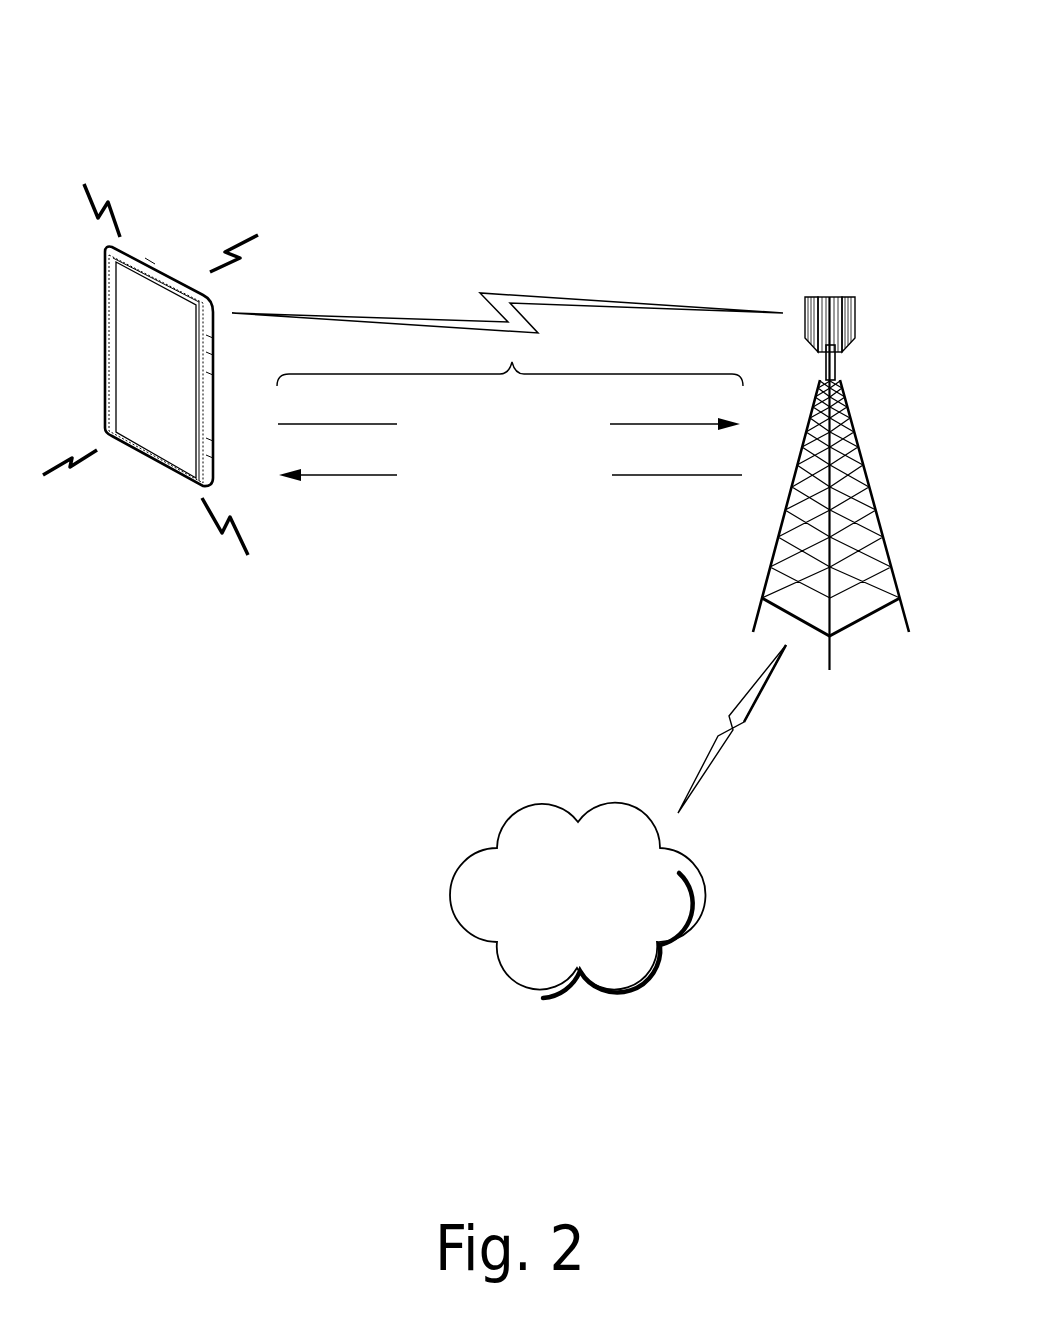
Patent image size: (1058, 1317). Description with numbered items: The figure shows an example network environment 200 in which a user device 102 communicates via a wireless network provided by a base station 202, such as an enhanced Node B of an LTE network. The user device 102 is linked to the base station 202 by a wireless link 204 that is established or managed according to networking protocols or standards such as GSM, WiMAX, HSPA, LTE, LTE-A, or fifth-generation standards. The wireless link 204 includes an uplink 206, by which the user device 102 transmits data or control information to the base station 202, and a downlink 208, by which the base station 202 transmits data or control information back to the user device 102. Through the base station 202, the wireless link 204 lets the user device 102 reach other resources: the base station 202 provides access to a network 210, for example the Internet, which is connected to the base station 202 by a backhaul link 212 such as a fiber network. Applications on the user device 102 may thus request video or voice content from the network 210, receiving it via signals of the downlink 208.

The network environment 200 is at (174, 52).
The user device 102 is at (147, 472).
The wireless link 204 is at (548, 284).
The base station 202 is at (857, 465).
The uplink 206 is at (585, 435).
The downlink 208 is at (605, 486).
The network 210 is at (642, 906).
The backhaul link 212 is at (738, 695).